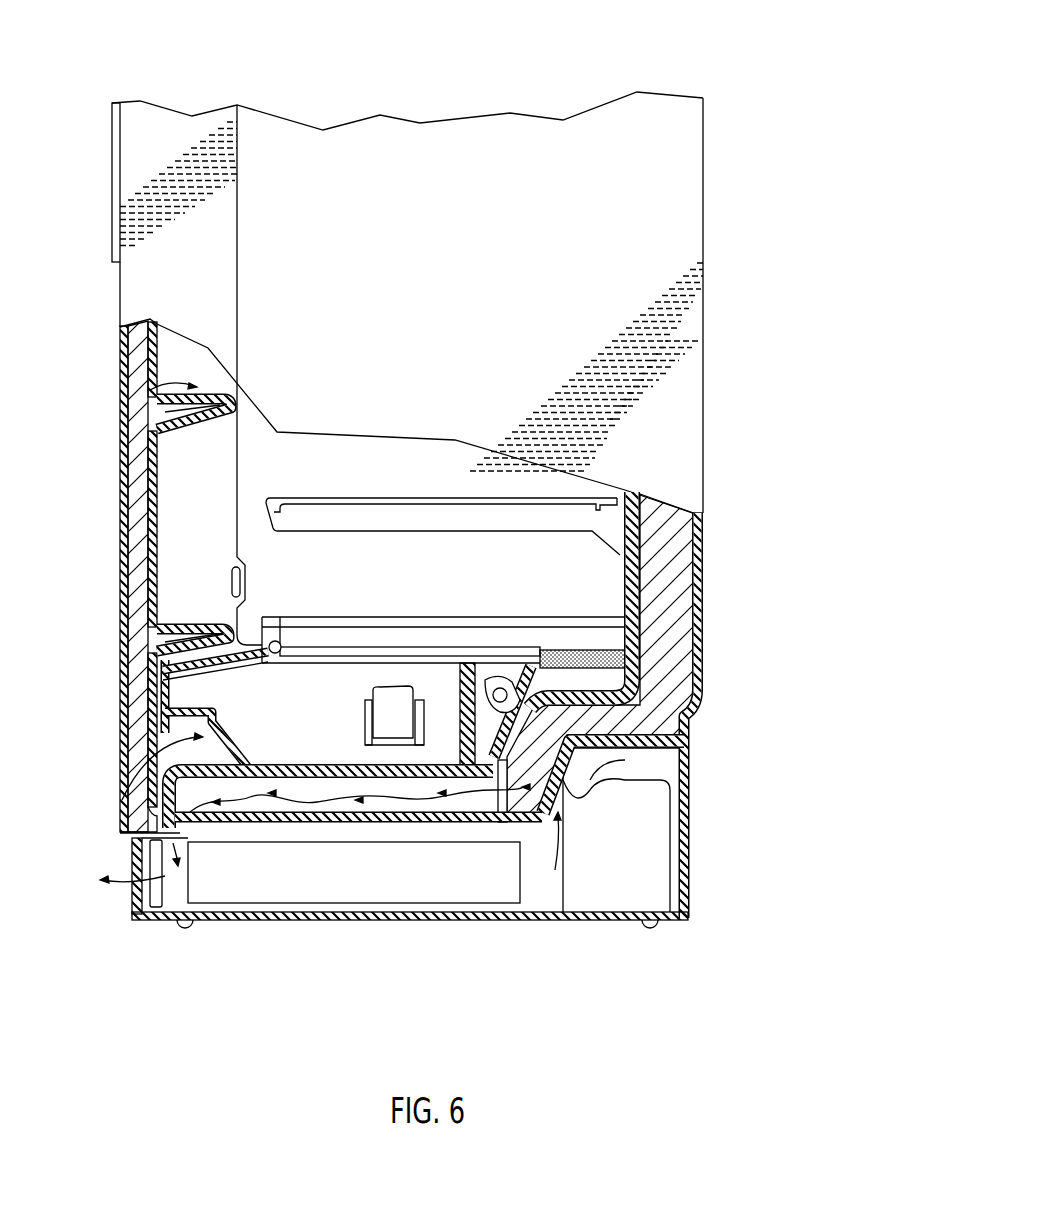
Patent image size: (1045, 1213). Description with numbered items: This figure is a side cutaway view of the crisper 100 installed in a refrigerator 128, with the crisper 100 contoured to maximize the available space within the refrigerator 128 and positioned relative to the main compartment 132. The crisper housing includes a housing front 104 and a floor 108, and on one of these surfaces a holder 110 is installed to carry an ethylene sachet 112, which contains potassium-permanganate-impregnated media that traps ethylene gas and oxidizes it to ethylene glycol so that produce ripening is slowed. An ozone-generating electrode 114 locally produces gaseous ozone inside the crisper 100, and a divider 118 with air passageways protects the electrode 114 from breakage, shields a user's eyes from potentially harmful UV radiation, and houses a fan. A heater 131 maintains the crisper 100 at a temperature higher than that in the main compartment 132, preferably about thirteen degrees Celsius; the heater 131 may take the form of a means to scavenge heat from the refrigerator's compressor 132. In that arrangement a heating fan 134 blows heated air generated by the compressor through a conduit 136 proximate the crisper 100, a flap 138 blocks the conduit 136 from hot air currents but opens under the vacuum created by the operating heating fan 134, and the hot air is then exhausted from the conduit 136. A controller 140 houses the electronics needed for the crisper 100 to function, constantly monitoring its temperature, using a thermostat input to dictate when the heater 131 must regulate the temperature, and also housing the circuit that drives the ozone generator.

The crisper 100 is at (150, 764).
The housing front 104 is at (148, 638).
The floor 108 is at (268, 777).
The holder 110 is at (413, 752).
The ethylene sachet 112 is at (395, 705).
The ozone-generating electrode 114 is at (500, 690).
The divider 118 is at (467, 752).
The refrigerator 128 is at (727, 157).
The heater 131 is at (473, 883).
The main compartment 132 is at (290, 484).
The heating fan 134 is at (525, 812).
The conduit 136 is at (313, 787).
The flap 138 is at (645, 702).
The controller 140 is at (627, 650).